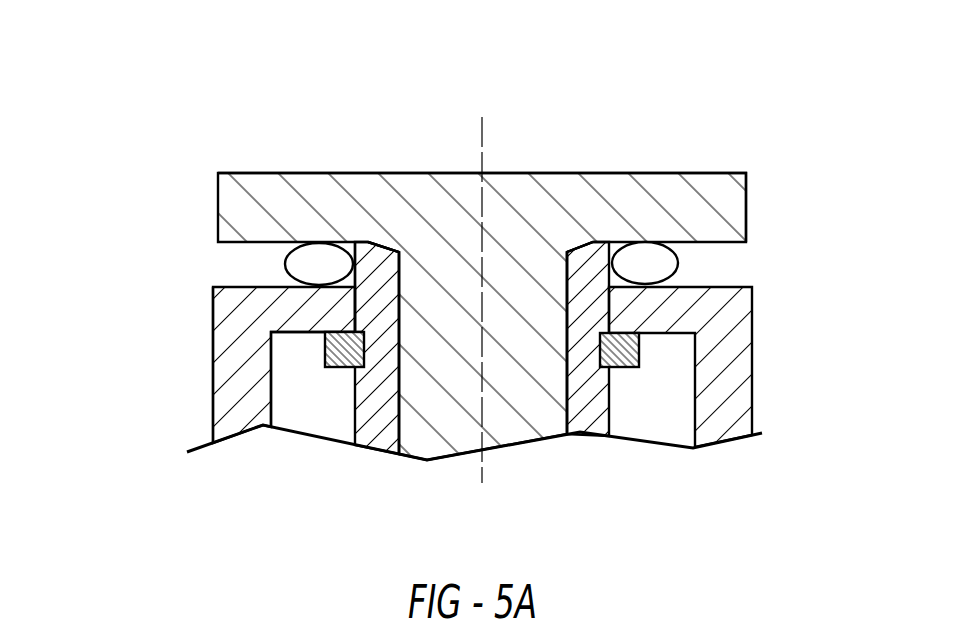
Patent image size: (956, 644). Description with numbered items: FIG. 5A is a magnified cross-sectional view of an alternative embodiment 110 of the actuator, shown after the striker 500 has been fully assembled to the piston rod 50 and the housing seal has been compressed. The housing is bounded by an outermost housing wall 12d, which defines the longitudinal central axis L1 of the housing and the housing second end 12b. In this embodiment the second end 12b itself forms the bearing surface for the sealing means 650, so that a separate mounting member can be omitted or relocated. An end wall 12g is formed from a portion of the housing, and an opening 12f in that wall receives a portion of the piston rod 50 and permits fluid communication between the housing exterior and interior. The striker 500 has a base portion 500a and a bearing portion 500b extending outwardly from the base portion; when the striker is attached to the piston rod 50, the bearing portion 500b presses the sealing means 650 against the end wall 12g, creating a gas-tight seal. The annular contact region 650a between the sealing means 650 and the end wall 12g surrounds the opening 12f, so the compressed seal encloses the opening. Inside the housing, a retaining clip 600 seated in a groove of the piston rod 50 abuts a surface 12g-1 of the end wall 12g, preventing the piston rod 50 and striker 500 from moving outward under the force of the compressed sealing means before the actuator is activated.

The alternative embodiment of the actuator 110 is at (158, 128).
The striker 500 is at (515, 190).
The base portion 500a is at (458, 278).
The bearing portion 500b is at (717, 192).
The longitudinal central axis L1 is at (484, 136).
The piston rod 50 is at (587, 408).
The end wall 12g is at (310, 308).
The outermost housing wall 12d is at (240, 405).
The surface of housing end wall 12g-1 is at (323, 332).
The opening 12f is at (353, 330).
The second end 12b is at (725, 318).
The retaining clip 600 is at (353, 350).
The sealing means 650 is at (317, 263).
The annular contact region 650a is at (646, 285).